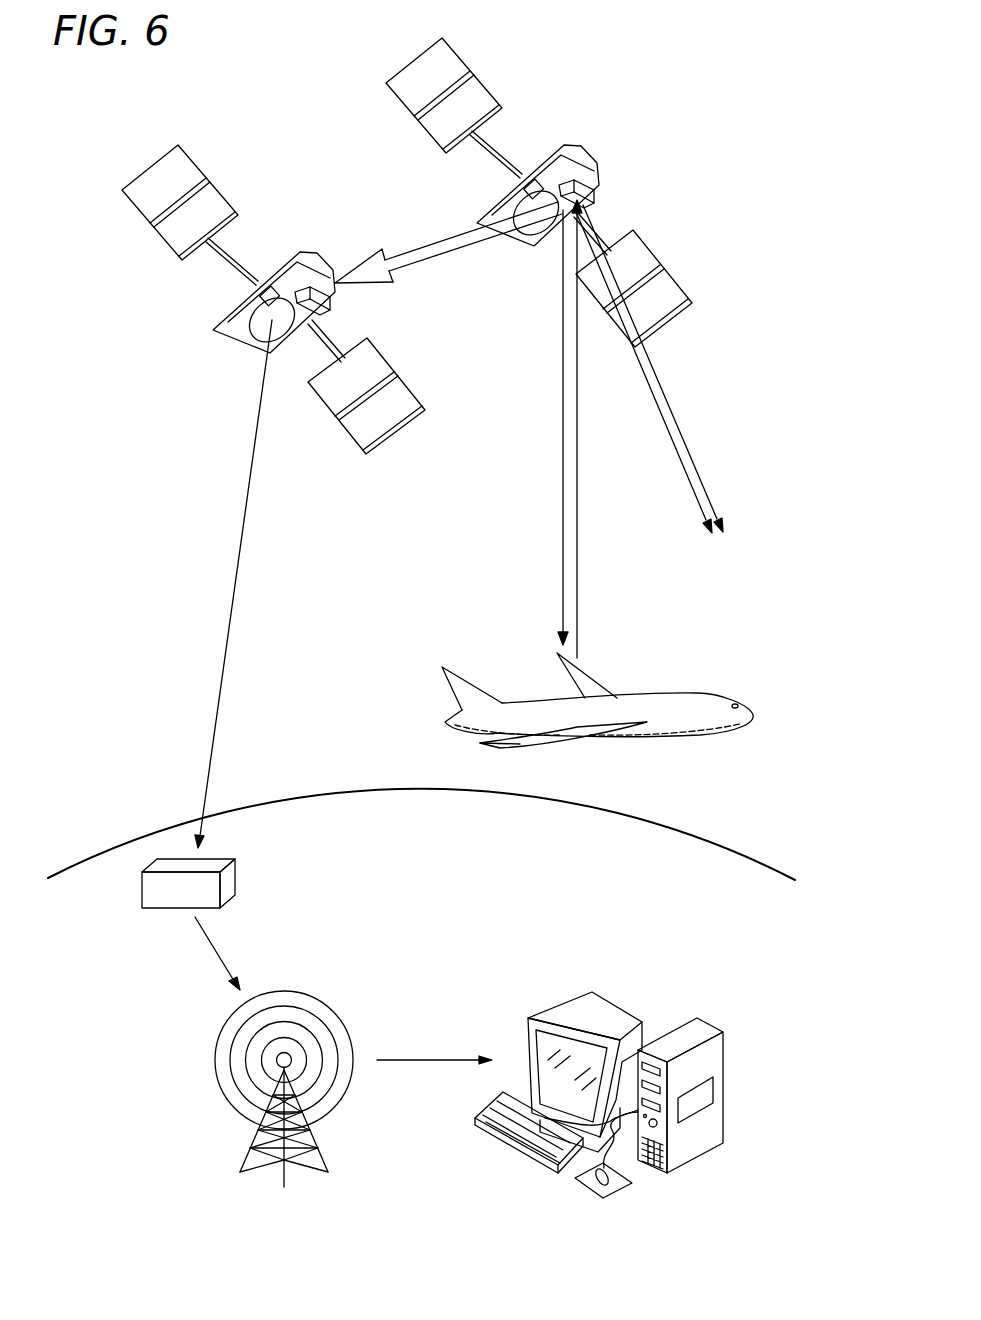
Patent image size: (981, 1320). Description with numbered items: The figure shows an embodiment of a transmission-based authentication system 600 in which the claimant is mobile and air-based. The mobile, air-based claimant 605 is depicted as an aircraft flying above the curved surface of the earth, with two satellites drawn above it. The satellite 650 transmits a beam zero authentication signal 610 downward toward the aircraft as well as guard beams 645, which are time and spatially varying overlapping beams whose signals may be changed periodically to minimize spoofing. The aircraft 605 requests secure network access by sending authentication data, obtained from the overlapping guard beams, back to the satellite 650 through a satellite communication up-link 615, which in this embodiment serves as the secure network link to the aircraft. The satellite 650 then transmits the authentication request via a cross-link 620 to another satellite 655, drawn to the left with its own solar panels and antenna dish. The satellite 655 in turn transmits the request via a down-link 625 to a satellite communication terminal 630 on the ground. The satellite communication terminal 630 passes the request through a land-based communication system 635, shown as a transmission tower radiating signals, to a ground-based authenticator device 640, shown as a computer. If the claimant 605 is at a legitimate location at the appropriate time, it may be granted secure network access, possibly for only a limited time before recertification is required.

The transmission-based authentication system 600 is at (302, 90).
The mobile, air-based claimant 605 is at (668, 663).
The beam zero authentication signal 610 is at (562, 347).
The satellite communication up-link 615 is at (578, 475).
The cross-link 620 is at (460, 240).
The down-link 625 is at (233, 582).
The satellite communication terminal 630 is at (142, 885).
The land-based communication system 635 is at (193, 1113).
The ground-based authenticator device 640 is at (645, 1005).
The guard beams 645 is at (676, 453).
The satellite 650 is at (627, 112).
The satellite 655 is at (197, 307).